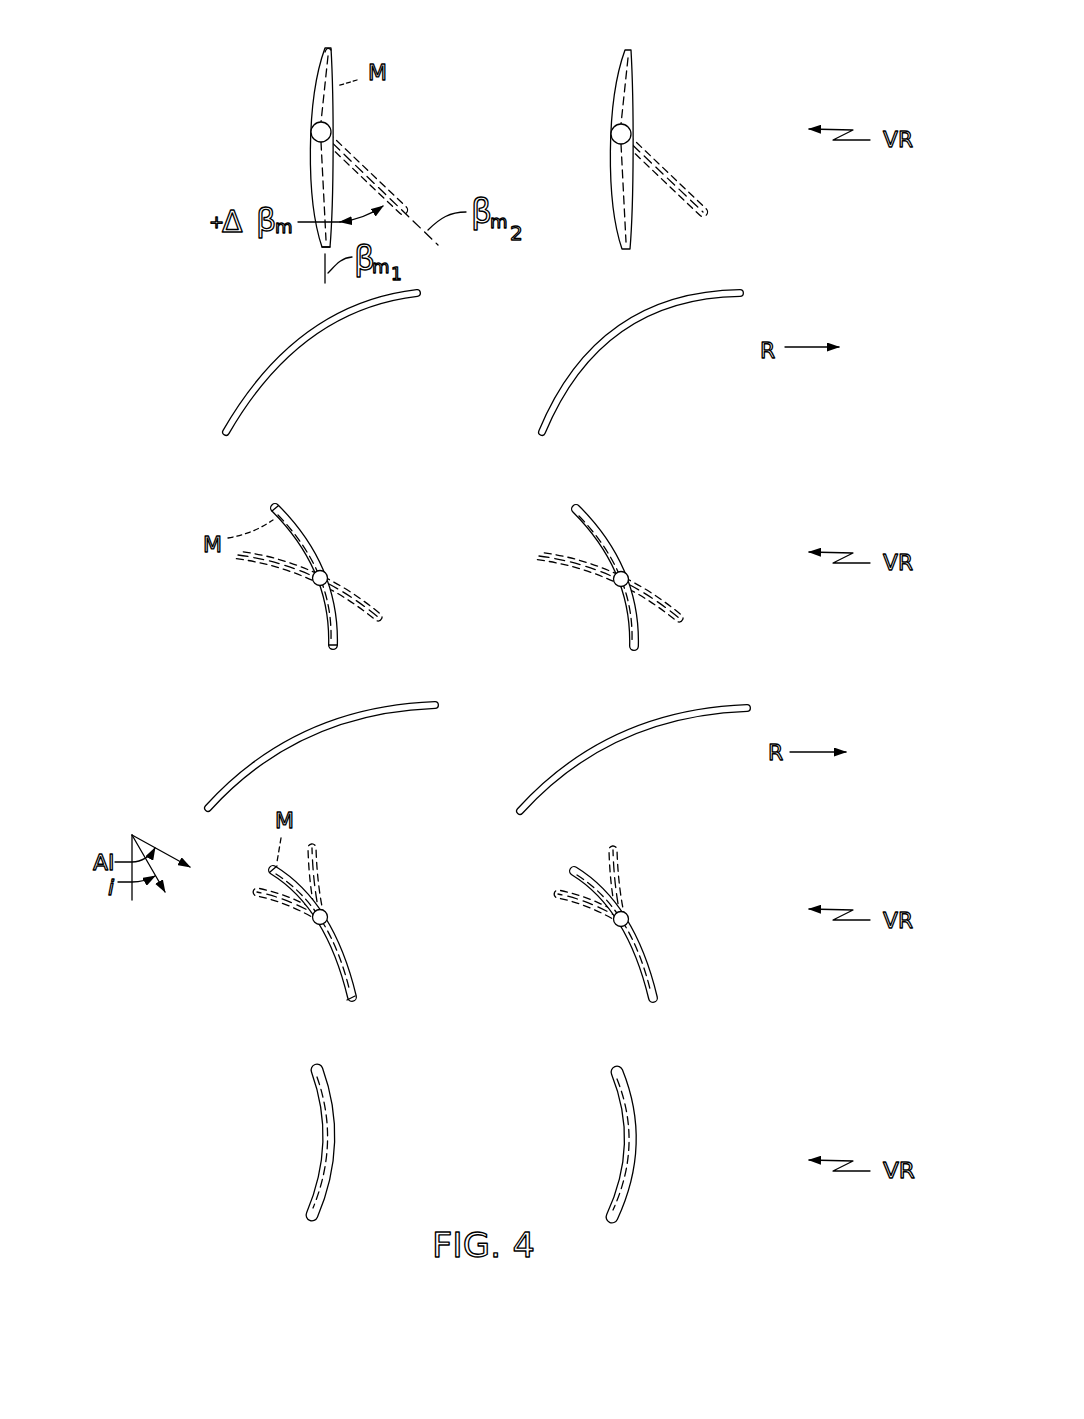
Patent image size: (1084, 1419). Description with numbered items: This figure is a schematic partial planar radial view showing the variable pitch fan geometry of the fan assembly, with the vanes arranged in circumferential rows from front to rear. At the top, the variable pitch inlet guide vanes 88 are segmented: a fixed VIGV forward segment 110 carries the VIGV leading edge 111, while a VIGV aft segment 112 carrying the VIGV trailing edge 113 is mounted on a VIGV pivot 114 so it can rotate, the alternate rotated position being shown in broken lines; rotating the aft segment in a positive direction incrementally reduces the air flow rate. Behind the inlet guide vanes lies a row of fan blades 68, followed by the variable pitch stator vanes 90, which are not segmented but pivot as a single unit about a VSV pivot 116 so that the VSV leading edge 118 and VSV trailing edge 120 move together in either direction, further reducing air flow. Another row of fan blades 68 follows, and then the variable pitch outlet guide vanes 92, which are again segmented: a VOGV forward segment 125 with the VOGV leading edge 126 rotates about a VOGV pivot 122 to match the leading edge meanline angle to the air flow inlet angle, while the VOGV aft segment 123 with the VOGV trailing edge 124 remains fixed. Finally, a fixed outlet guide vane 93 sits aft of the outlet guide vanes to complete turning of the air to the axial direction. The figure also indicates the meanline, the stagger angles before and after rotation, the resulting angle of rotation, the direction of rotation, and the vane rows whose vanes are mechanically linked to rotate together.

The fan blades 68 is at (769, 278).
The variable pitch inlet guide vanes 88 is at (655, 63).
The variable pitch stator vanes 90 is at (637, 499).
The variable pitch outlet guide vanes 92 is at (664, 847).
The fixed outlet guide vane 93 is at (662, 1112).
The VIGV forward segment 110 is at (312, 85).
The VIGV leading edge 111 is at (322, 52).
The VIGV aft segment 112 is at (387, 180).
The VIGV trailing edge 113 is at (318, 249).
The VIGV pivot 114 is at (331, 128).
The VSV pivot 116 is at (325, 572).
The VSV leading edge 118 is at (280, 507).
The VSV trailing edge 120 is at (330, 645).
The VOGV pivot 122 is at (328, 912).
The VOGV aft segment 123 is at (345, 938).
The VOGV trailing edge 124 is at (348, 1000).
The VOGV forward segment 125 is at (273, 903).
The VOGV leading edge 126 is at (275, 870).